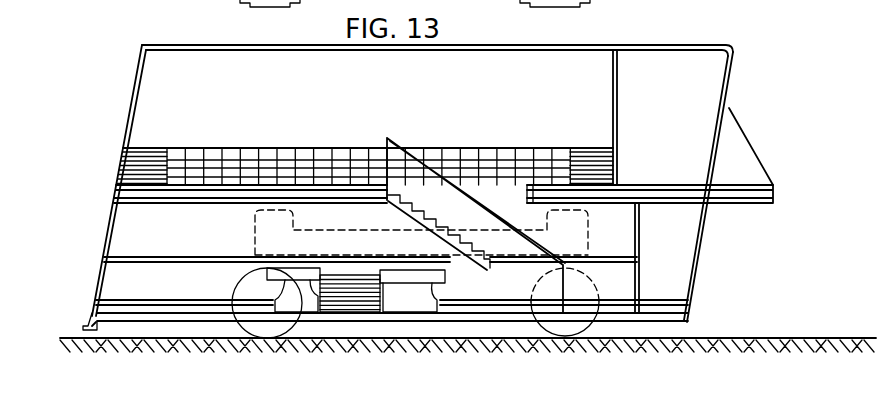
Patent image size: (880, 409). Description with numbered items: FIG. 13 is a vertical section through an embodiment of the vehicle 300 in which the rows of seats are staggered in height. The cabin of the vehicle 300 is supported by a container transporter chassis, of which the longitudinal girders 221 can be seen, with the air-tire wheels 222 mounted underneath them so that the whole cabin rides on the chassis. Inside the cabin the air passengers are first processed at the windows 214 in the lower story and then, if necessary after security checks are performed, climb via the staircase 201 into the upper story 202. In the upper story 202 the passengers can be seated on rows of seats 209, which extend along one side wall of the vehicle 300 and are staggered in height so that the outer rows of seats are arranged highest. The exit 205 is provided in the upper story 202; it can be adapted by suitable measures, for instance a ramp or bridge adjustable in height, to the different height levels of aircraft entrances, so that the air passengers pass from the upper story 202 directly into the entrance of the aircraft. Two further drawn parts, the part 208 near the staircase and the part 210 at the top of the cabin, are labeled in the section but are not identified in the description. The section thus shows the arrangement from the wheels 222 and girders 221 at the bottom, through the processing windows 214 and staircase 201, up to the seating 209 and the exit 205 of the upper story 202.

The staircase 201 is at (118, 280).
The upper story 202 is at (145, 90).
The exit 205 is at (740, 168).
The stairway 208 is at (490, 277).
The rows of seats 209 is at (248, 177).
The roof 210 is at (170, 44).
The windows 214 is at (425, 297).
The longitudinal girders 221 is at (373, 240).
The air-tire wheels 222 is at (263, 328).
The vehicle 300 is at (752, 97).